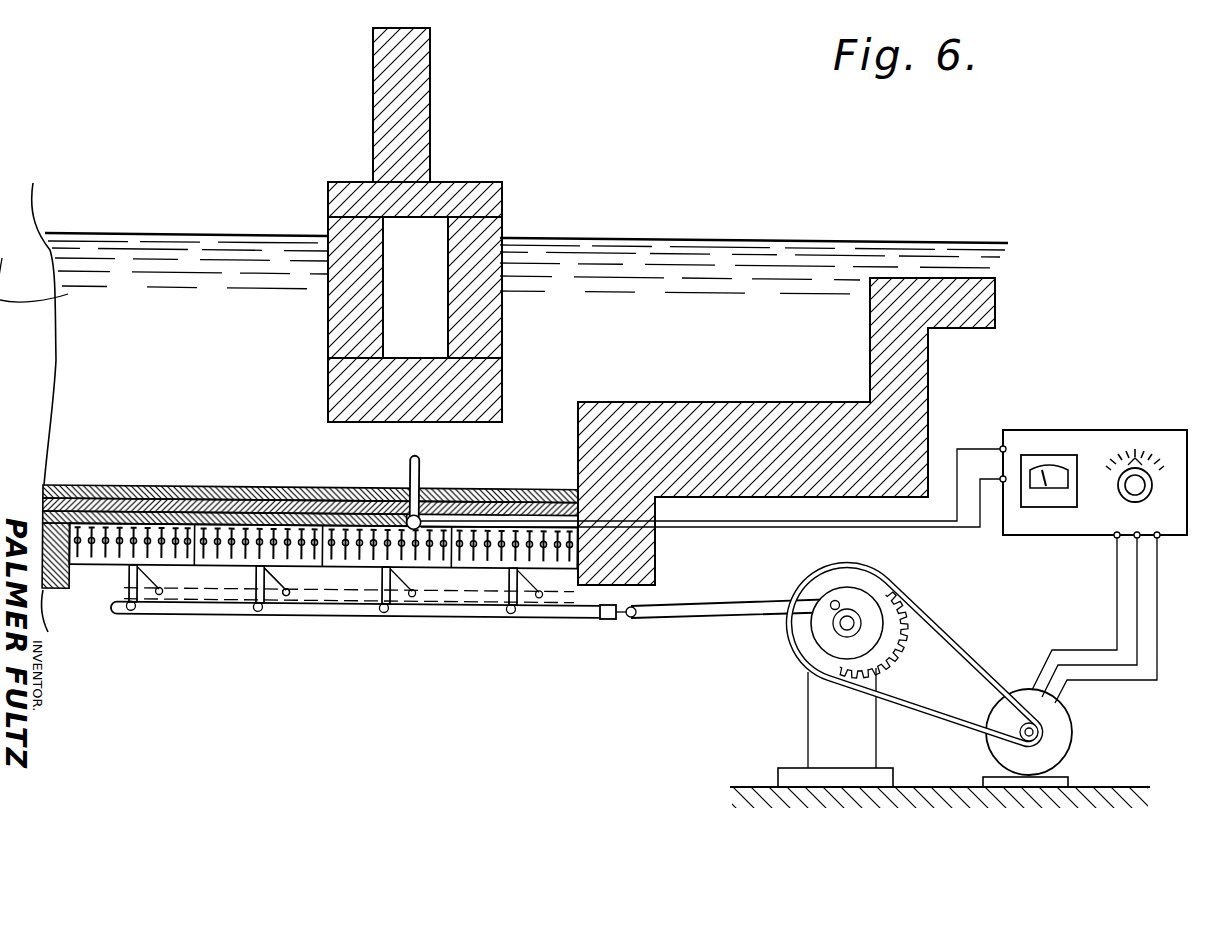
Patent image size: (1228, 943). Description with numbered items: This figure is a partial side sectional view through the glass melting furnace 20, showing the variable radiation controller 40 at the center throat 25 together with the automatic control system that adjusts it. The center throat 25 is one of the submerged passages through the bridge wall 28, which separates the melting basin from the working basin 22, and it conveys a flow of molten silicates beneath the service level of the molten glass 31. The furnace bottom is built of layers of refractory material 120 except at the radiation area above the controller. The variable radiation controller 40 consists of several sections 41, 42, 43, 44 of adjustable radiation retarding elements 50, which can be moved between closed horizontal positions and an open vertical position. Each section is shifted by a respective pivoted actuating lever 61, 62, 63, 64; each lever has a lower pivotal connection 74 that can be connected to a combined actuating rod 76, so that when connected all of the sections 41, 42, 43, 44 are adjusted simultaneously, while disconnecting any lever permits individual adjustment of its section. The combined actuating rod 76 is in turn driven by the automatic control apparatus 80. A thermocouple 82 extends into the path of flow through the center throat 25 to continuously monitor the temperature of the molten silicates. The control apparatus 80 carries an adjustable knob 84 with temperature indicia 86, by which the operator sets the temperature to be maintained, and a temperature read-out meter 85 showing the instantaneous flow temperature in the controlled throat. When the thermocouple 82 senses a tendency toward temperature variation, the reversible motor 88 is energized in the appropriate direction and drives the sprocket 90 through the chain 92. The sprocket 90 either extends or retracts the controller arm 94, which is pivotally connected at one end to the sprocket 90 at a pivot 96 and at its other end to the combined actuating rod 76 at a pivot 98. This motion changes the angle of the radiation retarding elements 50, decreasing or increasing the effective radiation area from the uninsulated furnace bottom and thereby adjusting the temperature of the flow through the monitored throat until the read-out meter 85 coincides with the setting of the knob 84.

The glass melting furnace 20 is at (1010, 296).
The working basin 22 is at (762, 322).
The center throat 25 is at (480, 447).
The bridge wall 28 is at (480, 196).
The molten glass 31 is at (198, 248).
The variable radiation controller 40 is at (197, 604).
The section 41 is at (128, 490).
The section 42 is at (215, 502).
The section 43 is at (345, 522).
The section 44 is at (510, 536).
The radiation retarding elements 50 is at (270, 512).
The actuating lever 61 is at (122, 592).
The actuating lever 62 is at (232, 563).
The actuating lever 63 is at (380, 592).
The actuating lever 64 is at (512, 595).
The lower pivotal connection 74 is at (133, 610).
The combined actuating rod 76 is at (298, 610).
The automatic control apparatus 80 is at (1170, 426).
The thermocouple 82 is at (410, 466).
The adjustable knob 84 is at (1150, 488).
The temperature read-out meter 85 is at (1052, 460).
The temperature indicia 86 is at (1115, 460).
The motor 88 is at (1070, 722).
The sprocket 90 is at (870, 612).
The chain 92 is at (970, 660).
The controller arm 94 is at (745, 602).
The pivot 96 is at (835, 600).
The pivot 98 is at (640, 620).
The refractory material 120 is at (30, 485).